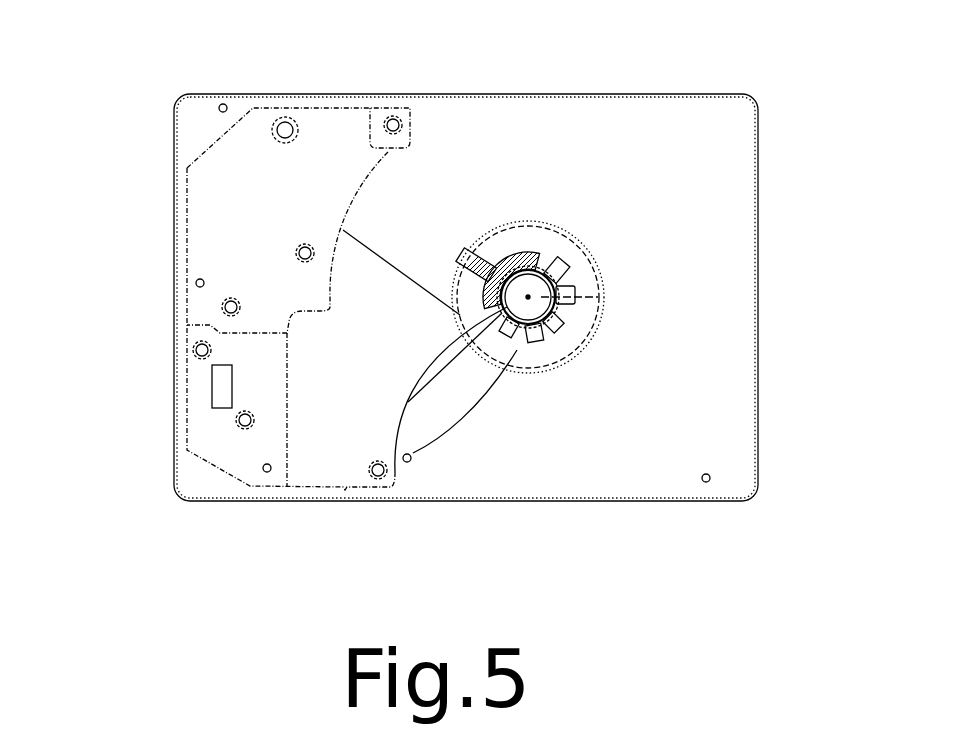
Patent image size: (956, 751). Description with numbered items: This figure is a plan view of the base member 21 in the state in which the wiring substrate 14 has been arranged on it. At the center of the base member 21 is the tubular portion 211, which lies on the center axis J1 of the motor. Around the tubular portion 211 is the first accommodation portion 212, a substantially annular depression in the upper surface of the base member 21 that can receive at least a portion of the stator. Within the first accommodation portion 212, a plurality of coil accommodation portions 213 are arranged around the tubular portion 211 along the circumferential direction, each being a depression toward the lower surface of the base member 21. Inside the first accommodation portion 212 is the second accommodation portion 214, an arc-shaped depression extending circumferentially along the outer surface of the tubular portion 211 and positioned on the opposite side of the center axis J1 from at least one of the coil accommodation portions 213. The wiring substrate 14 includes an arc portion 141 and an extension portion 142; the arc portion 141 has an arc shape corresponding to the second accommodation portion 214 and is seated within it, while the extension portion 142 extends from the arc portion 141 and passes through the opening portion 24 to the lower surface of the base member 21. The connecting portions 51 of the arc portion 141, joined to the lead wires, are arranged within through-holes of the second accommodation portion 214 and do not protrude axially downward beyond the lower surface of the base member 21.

The base member 21 is at (78, 116).
The opening portion 24 is at (477, 250).
The extension portion 142 is at (493, 258).
The arc portion 141 is at (522, 253).
The wiring substrate 14 is at (547, 268).
The coil accommodation portions 213 is at (562, 268).
The first accommodation portion 212 is at (587, 275).
The center axis J1 is at (587, 297).
The second accommodation portion 214 is at (391, 470).
The connecting portions 51 is at (513, 333).
The tubular portion 211 is at (563, 327).